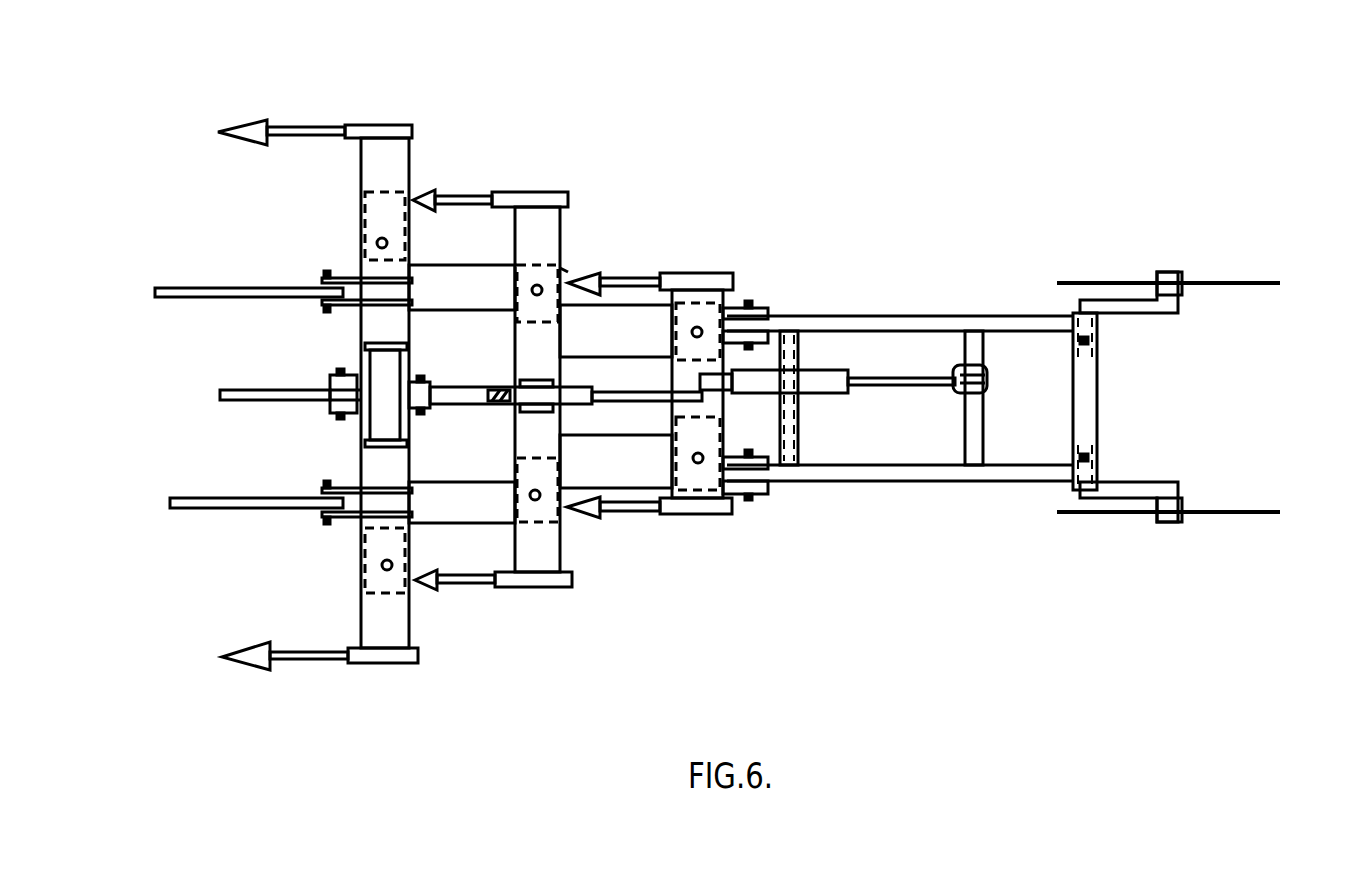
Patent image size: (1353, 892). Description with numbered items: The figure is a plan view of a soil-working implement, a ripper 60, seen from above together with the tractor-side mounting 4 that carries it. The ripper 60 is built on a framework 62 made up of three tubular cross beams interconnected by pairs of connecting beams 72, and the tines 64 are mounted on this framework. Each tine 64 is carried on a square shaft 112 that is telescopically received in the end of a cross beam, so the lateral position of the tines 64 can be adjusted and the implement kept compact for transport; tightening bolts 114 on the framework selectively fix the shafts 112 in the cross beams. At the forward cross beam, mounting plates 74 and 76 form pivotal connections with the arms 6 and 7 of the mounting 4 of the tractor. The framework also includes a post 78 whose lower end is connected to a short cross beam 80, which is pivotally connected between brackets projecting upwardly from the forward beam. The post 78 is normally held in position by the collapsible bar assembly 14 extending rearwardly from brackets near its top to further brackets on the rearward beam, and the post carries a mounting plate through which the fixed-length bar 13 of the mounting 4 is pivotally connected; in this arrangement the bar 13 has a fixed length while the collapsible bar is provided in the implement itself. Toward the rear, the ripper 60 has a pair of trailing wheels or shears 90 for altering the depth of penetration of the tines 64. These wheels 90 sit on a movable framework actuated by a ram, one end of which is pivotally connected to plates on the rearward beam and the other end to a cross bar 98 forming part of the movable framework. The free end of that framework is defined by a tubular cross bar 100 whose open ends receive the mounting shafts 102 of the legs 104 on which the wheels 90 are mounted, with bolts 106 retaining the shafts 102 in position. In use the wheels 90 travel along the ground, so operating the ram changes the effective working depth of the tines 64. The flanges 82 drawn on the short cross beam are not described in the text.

The ripper 60 is at (569, 76).
The mounting 4 is at (176, 429).
The framework 62 is at (578, 266).
The tines 64 is at (297, 128).
The connecting beams 72 is at (418, 285).
The square shafts 112 is at (370, 155).
The tightening bolts 114 is at (377, 238).
The arm 6 is at (237, 292).
The arm 7 is at (240, 503).
The bar 13 is at (257, 392).
The collapsible bar assembly 14 is at (470, 410).
The mounting plate 76 is at (325, 278).
The mounting plate 74 is at (330, 305).
The short cross beam 80 is at (395, 365).
The flanges 82 is at (363, 343).
The post 78 is at (395, 415).
The cross bar 98 is at (973, 423).
The tubular cross bar 100 is at (1097, 393).
The mounting shafts 102 is at (1093, 353).
The legs 104 is at (1137, 303).
The bolts 106 is at (1075, 340).
The trailing wheels 90 is at (1257, 280).